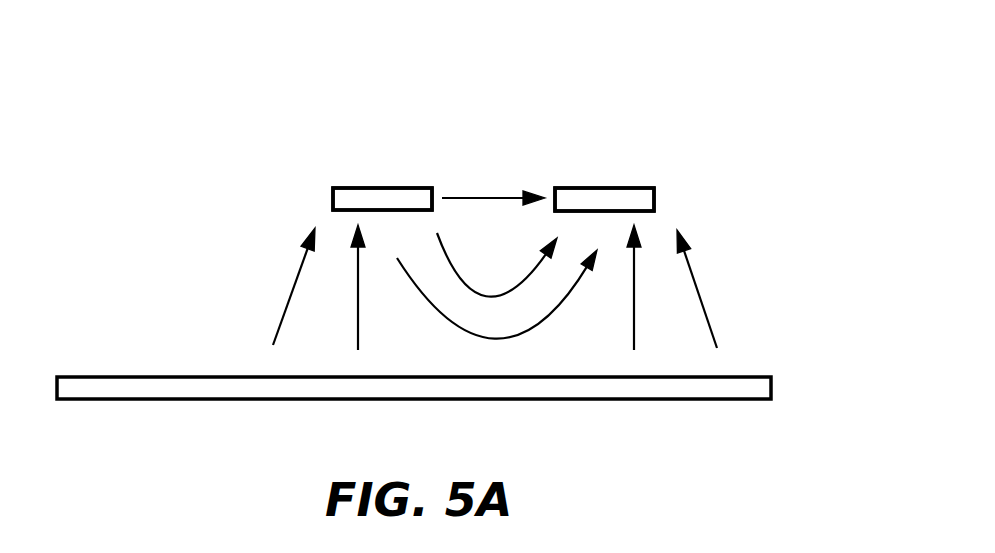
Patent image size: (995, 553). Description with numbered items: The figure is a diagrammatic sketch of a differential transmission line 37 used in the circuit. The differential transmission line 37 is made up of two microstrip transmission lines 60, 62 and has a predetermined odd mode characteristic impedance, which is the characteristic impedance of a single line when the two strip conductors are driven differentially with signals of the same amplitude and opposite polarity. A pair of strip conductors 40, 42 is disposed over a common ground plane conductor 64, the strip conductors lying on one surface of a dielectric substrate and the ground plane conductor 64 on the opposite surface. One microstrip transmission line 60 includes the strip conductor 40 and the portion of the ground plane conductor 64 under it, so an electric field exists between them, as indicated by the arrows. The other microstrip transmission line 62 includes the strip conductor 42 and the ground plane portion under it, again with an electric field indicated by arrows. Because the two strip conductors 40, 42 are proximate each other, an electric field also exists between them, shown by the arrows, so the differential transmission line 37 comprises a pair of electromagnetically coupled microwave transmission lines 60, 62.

The differential transmission line 37 is at (626, 79).
The strip conductor 40 is at (331, 195).
The strip conductor 42 is at (656, 195).
The microstrip transmission line 60 is at (326, 139).
The microstrip transmission line 62 is at (548, 140).
The ground plane conductor 64 is at (193, 375).